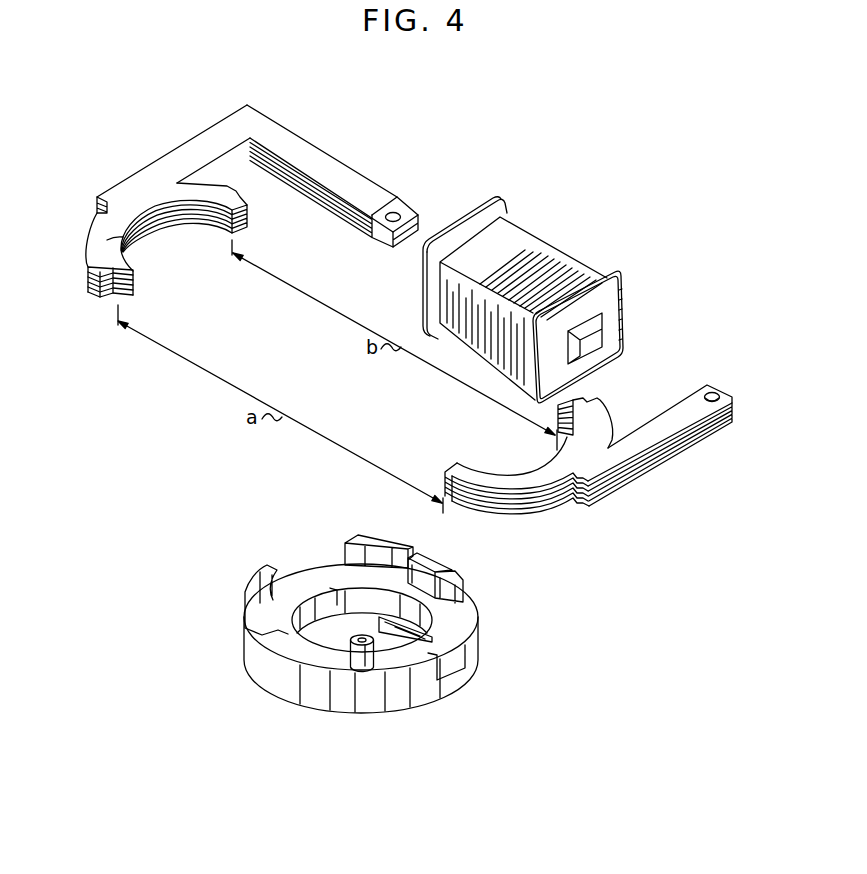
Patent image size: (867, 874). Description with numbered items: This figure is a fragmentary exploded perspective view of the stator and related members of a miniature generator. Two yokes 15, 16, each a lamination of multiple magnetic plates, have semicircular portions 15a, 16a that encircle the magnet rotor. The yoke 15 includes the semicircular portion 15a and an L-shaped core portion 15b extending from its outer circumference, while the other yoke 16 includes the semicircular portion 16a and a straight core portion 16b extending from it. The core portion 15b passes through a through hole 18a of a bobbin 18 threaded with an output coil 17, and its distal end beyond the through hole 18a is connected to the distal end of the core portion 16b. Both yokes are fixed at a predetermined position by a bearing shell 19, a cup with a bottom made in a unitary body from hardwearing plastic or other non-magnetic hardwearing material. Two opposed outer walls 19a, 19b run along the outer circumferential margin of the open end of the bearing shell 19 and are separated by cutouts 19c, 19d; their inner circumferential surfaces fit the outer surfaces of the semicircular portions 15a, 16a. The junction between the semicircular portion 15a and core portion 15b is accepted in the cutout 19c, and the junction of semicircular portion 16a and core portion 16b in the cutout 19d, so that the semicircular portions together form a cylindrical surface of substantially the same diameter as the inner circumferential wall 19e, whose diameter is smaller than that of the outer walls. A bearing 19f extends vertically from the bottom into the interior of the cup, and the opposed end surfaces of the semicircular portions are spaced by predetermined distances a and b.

The yoke 15 is at (155, 176).
The semicircular portion 15a is at (124, 238).
The L-shaped core portion 15b is at (337, 171).
The yoke 16 is at (590, 468).
The semicircular portion 16a is at (507, 480).
The straight core portion 16b is at (668, 424).
The output coil 17 is at (535, 250).
The bobbin 18 is at (626, 284).
The through hole 18a is at (603, 328).
The bearing shell 19 is at (300, 677).
The outer wall 19a is at (250, 638).
The outer wall 19b is at (462, 577).
The cutout 19c is at (333, 560).
The cutout 19d is at (470, 656).
The inner circumferential wall 19e is at (337, 600).
The bearing 19f is at (378, 656).